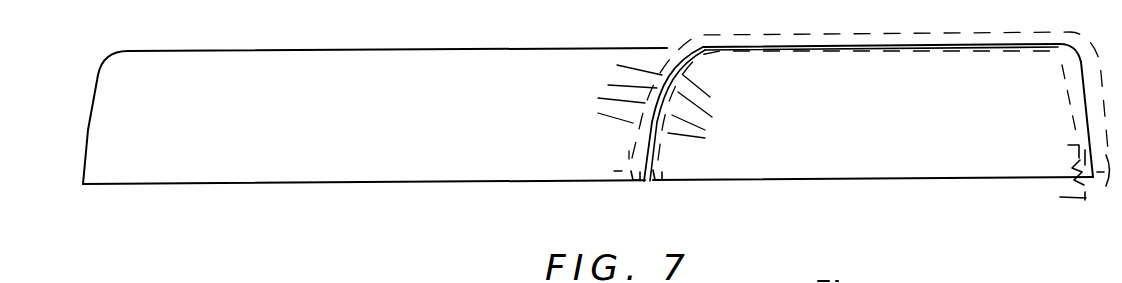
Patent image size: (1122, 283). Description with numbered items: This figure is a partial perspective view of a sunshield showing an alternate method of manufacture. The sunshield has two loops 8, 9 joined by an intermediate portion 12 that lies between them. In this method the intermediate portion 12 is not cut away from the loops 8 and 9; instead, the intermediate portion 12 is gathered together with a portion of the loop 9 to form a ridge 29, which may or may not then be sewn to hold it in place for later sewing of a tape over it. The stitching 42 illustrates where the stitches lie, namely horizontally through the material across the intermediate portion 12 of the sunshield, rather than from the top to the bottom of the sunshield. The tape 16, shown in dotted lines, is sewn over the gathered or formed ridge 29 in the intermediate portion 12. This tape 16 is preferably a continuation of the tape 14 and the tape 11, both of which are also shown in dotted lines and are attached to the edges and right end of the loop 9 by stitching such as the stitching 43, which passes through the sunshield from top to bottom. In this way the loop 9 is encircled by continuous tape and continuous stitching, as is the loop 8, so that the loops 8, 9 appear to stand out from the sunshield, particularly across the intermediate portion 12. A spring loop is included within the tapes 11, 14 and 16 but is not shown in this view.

The loop 8 is at (413, 155).
The loop 9 is at (875, 158).
The tape 11 is at (1055, 145).
The intermediate portion 12 is at (563, 95).
The tape 14 is at (958, 48).
The tape 16 is at (632, 156).
The ridge 29 is at (638, 142).
The stitching 42 is at (676, 167).
The stitching 43 is at (1060, 197).